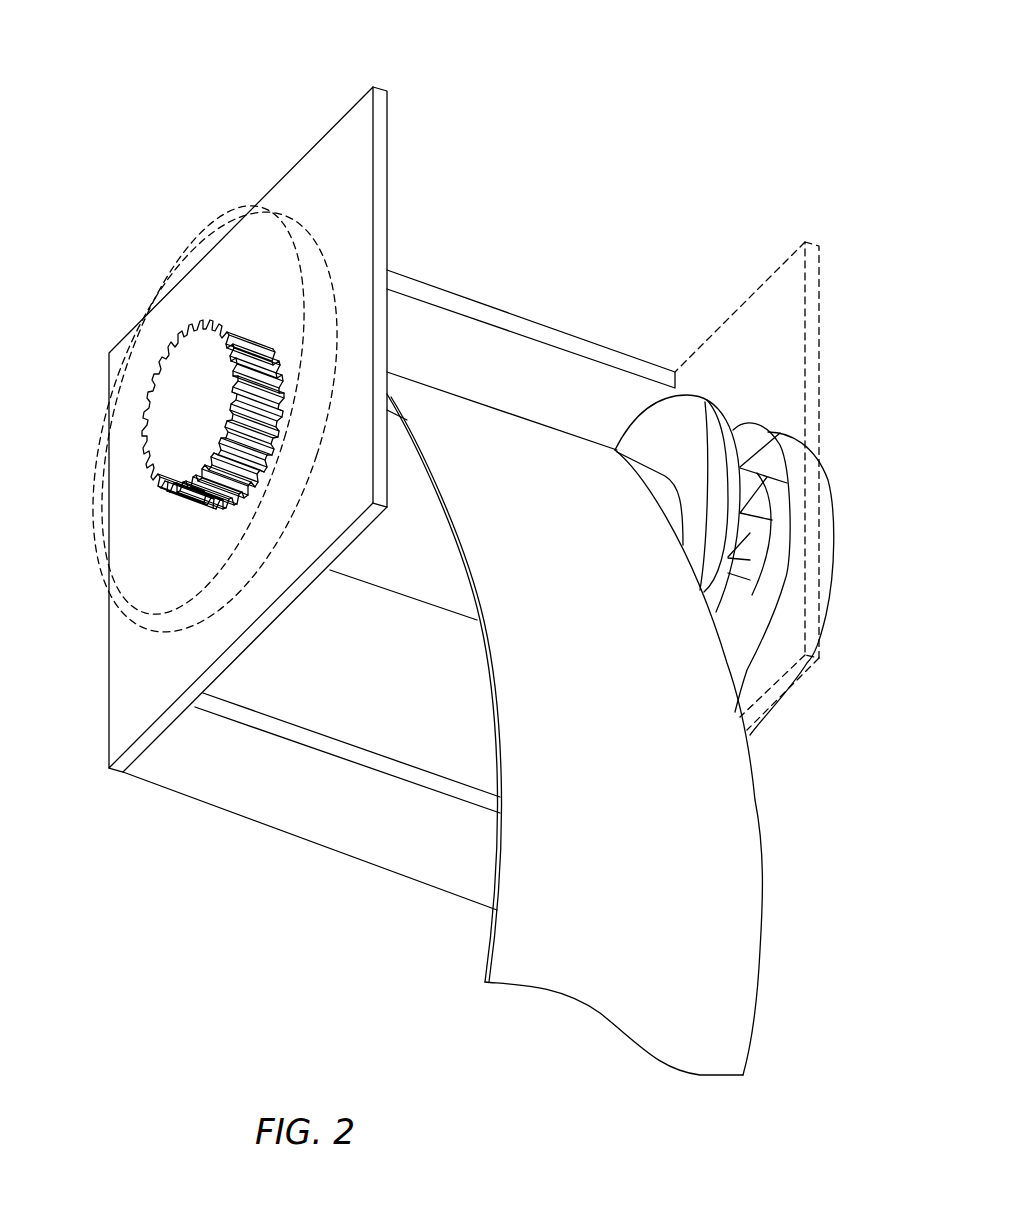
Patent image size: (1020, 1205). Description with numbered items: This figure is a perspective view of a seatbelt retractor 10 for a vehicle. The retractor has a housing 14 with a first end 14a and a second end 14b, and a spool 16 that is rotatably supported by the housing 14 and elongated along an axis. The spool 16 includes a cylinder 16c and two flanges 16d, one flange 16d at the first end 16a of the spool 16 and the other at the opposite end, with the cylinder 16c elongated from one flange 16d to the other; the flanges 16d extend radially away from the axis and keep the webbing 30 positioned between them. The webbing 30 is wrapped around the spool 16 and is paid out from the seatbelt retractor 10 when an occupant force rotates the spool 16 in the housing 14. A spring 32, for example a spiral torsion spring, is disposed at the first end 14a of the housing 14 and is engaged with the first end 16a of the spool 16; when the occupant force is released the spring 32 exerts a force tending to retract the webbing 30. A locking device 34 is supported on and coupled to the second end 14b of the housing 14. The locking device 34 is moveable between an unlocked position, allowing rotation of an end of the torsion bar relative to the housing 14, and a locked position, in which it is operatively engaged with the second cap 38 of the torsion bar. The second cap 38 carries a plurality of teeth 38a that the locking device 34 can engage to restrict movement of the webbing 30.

The seatbelt retractor 10 is at (750, 124).
The housing 14 is at (443, 285).
The first end of the housing 14a is at (822, 340).
The second end of the housing 14b is at (373, 172).
The spool 16 is at (363, 607).
The first end of the spool 16a is at (677, 431).
The cylinder 16c is at (457, 620).
The flanges 16d is at (713, 395).
The webbing 30 is at (763, 848).
The spring 32 is at (833, 490).
The locking device 34 is at (128, 333).
The second cap 38 is at (182, 436).
The teeth 38a is at (253, 362).